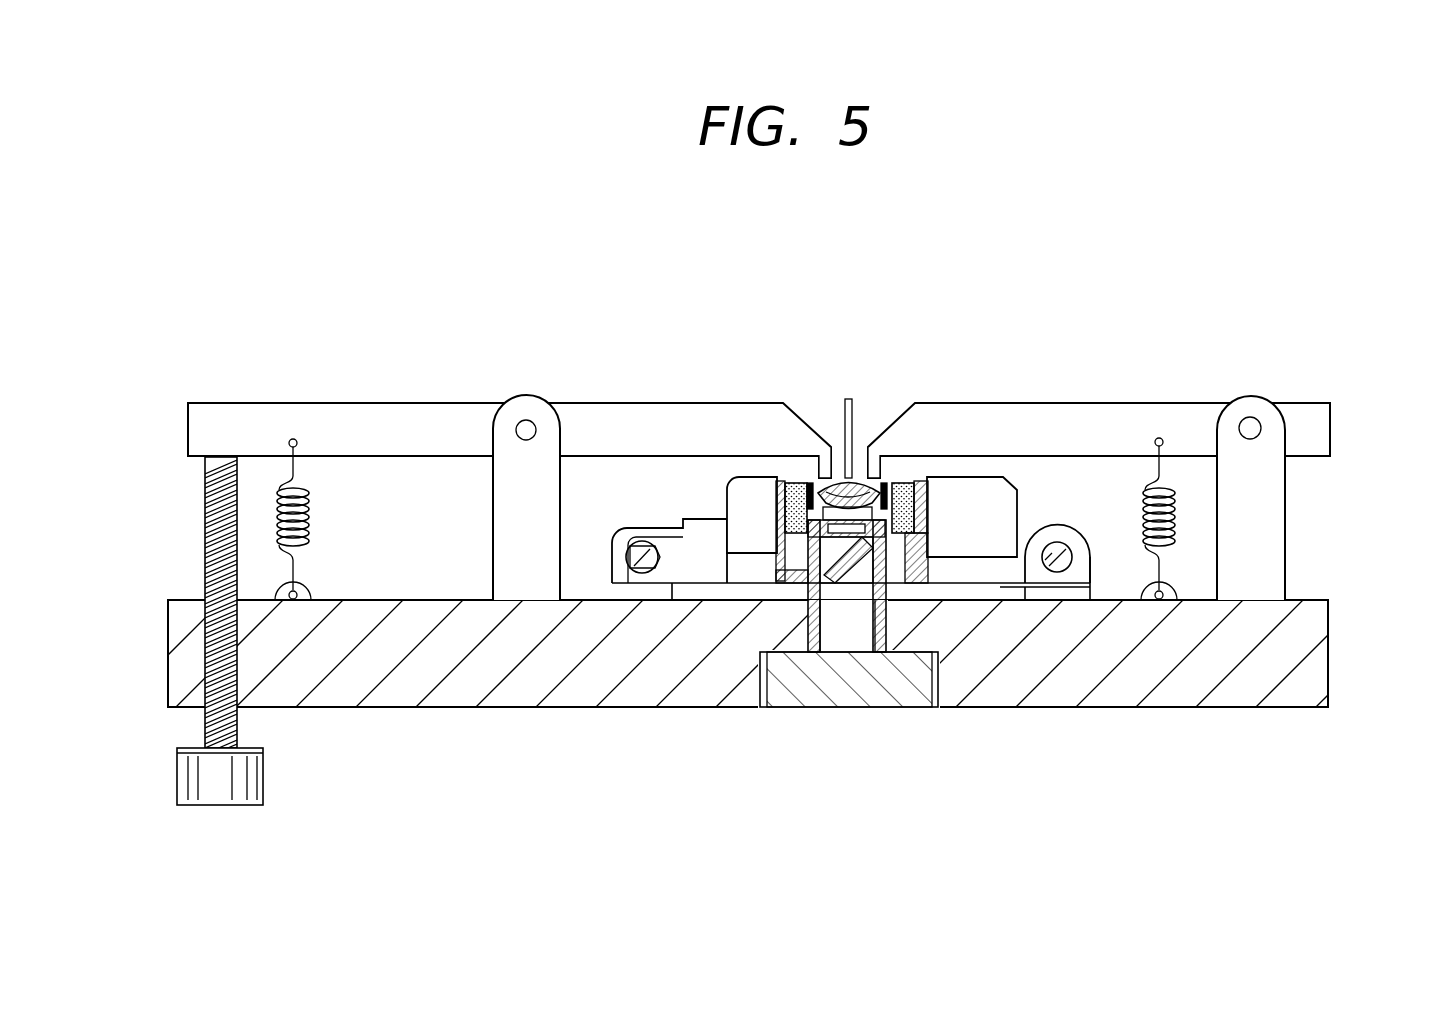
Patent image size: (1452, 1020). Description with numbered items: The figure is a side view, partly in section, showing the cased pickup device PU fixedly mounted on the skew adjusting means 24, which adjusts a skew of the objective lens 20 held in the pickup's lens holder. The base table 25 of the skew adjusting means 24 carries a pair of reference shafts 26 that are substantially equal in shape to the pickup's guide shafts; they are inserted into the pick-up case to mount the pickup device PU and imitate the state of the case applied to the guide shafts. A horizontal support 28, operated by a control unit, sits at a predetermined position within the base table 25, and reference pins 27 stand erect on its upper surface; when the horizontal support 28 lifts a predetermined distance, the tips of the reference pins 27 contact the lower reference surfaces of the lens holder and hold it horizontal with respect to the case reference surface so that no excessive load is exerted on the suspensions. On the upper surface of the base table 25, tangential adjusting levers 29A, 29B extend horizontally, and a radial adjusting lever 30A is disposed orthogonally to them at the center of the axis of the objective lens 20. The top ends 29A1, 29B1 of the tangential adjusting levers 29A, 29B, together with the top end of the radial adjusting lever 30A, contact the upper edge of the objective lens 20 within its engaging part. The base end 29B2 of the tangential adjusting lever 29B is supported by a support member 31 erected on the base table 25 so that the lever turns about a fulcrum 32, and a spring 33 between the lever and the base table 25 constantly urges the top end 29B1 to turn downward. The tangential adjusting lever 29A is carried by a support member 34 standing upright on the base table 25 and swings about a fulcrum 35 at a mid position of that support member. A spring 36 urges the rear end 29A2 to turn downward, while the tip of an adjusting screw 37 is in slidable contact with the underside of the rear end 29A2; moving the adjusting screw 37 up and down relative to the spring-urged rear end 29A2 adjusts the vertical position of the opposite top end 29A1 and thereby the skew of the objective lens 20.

The skew adjusting means 24 is at (406, 290).
The base table 25 is at (402, 694).
The reference shafts 26 is at (640, 542).
The reference pins 27 is at (812, 632).
The horizontal support 28 is at (840, 688).
The tangential adjusting lever 29A is at (492, 398).
The top end of tangential adjusting lever 29A1 is at (834, 466).
The rear end of tangential adjusting lever 29A2 is at (217, 407).
The tangential adjusting lever 29B is at (1157, 406).
The top end of tangential adjusting lever 29B1 is at (873, 460).
The base end of tangential adjusting lever 29B2 is at (1313, 432).
The radial adjusting lever 30A is at (857, 460).
The support member 31 is at (1263, 525).
The fulcrum 32 is at (1248, 418).
The spring 33 is at (1168, 487).
The support member 34 is at (508, 502).
The fulcrum 35 is at (527, 420).
The spring 36 is at (308, 523).
The adjusting screw 37 is at (210, 552).
The pickup device PU is at (748, 462).
The objective lens 20 is at (890, 470).